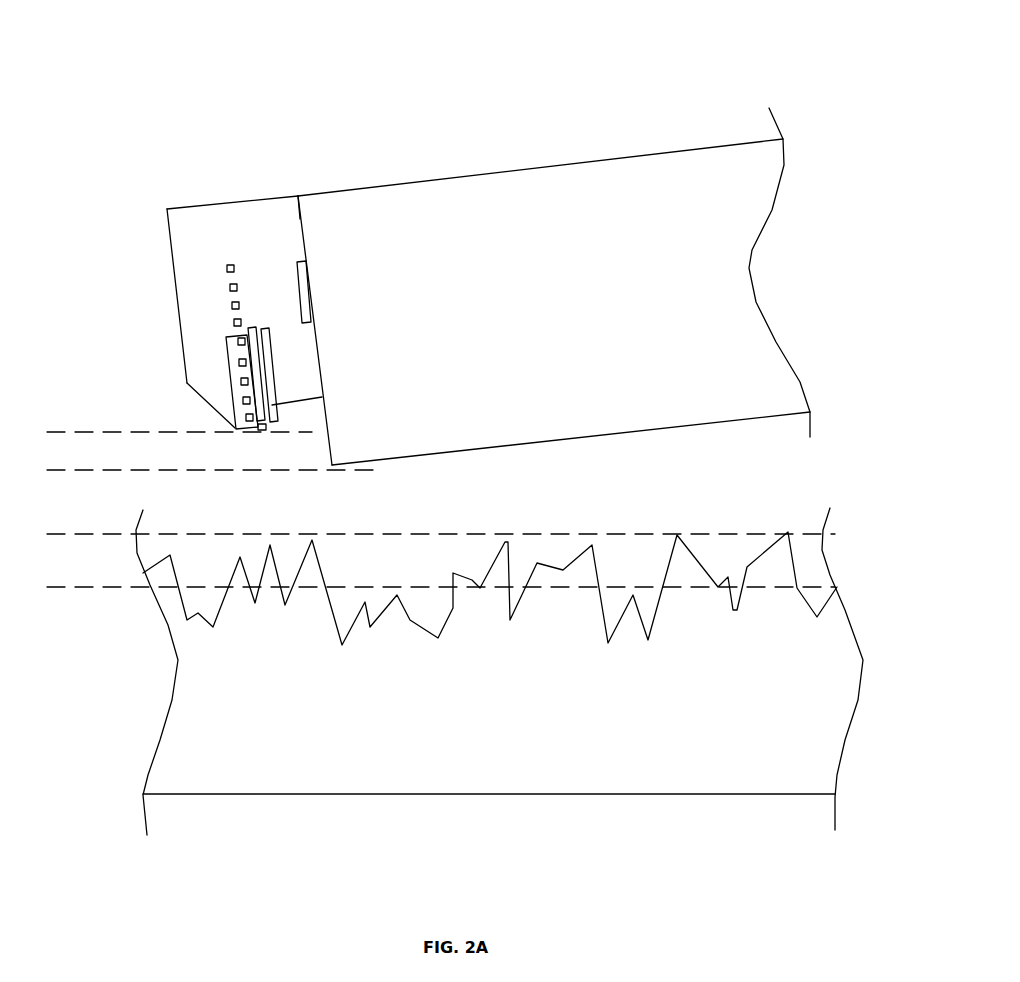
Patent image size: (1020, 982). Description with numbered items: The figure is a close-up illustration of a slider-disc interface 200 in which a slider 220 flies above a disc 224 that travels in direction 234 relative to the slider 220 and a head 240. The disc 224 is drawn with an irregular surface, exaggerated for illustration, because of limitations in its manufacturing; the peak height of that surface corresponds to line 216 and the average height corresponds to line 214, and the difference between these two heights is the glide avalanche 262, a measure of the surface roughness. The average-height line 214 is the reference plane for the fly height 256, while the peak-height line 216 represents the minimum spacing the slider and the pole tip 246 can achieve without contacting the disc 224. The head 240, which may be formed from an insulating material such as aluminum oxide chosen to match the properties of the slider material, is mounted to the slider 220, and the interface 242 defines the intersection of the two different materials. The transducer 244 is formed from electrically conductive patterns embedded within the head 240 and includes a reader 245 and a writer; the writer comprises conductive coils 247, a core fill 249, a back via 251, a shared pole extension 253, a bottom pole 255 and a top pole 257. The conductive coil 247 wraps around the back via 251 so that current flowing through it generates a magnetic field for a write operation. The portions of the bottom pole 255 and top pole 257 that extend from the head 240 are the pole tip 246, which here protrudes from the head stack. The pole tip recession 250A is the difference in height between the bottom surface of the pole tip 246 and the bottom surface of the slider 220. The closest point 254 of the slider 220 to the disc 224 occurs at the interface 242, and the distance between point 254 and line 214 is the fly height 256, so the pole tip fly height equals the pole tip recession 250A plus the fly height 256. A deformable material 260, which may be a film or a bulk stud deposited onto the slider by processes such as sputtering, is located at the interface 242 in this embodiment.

The printing system 200 is at (252, 82).
The slider 220 is at (562, 318).
The head 240 is at (258, 243).
The interface 242 is at (300, 219).
The transducer 244 is at (236, 331).
The reader 245 is at (272, 382).
The pole tip 246 is at (232, 428).
The conductive coils 247 is at (240, 360).
The core fill 249 is at (241, 379).
The back via 251 is at (250, 343).
The shared pole extension 253 is at (259, 430).
The closest point 254 is at (332, 465).
The bottom pole 255 is at (264, 429).
The top pole 257 is at (243, 398).
The deformable material 260 is at (311, 292).
The pole tip recession 250A is at (78, 500).
The fly height 256 is at (56, 478).
The glide avalanche 262 is at (99, 542).
The disc 224 is at (506, 654).
The peak height line 216 is at (788, 532).
The average height line 214 is at (833, 586).
The direction 234 is at (598, 845).